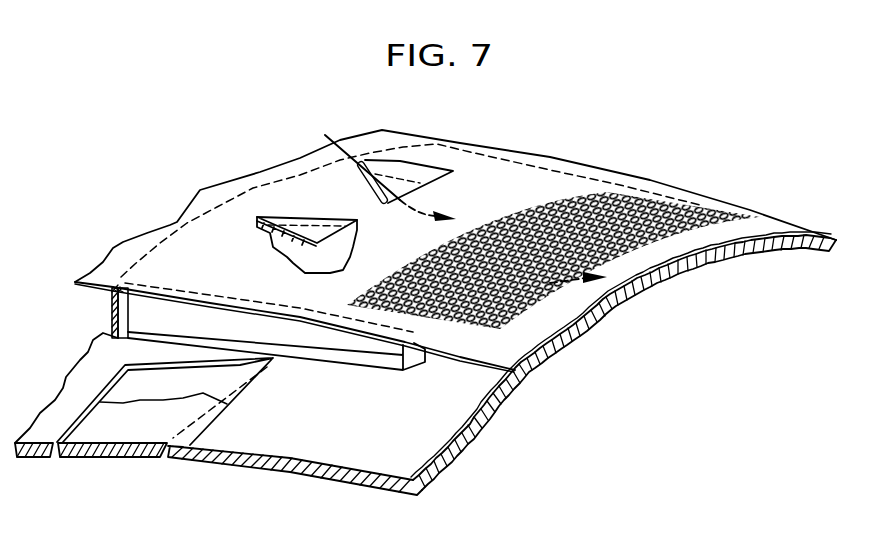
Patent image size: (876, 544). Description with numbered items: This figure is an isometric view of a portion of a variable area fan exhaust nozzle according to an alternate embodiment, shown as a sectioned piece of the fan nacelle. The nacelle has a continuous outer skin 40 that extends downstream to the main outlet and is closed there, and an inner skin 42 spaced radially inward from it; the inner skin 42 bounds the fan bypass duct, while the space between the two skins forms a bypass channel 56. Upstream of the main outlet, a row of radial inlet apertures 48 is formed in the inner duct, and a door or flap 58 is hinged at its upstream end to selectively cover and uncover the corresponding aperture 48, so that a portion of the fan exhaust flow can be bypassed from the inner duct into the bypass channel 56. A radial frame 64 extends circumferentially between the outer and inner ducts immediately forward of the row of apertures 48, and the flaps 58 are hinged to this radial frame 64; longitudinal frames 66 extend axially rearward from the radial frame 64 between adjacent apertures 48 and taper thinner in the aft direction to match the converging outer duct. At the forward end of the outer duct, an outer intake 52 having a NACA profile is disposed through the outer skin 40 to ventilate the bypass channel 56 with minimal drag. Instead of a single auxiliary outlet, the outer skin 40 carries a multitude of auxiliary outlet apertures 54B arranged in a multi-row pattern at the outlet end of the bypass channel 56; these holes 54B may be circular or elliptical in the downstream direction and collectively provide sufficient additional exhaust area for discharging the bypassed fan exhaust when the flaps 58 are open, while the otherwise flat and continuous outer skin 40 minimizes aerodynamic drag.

The outer skin 40 is at (297, 160).
The inner skin 42 is at (33, 457).
The inlet apertures 48 is at (118, 377).
The outer intakes 52 is at (427, 163).
The auxiliary outlet apertures 54B is at (571, 197).
The bypass channel 56 is at (330, 340).
The flaps 58 is at (130, 457).
The radial frame 64 is at (112, 313).
The longitudinal frames 66 is at (148, 312).